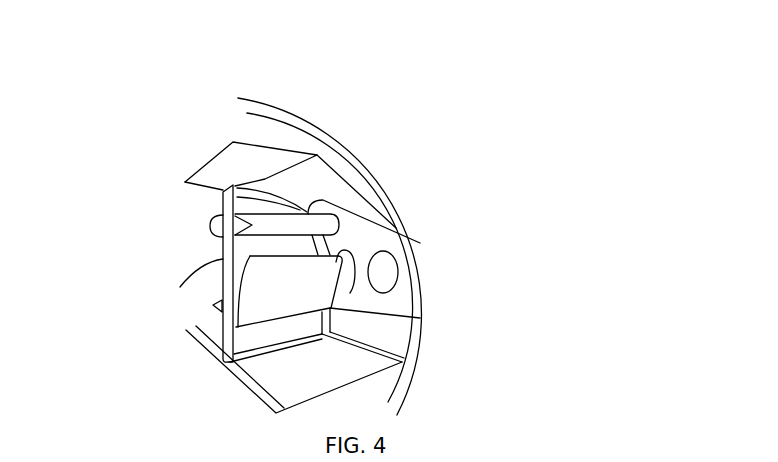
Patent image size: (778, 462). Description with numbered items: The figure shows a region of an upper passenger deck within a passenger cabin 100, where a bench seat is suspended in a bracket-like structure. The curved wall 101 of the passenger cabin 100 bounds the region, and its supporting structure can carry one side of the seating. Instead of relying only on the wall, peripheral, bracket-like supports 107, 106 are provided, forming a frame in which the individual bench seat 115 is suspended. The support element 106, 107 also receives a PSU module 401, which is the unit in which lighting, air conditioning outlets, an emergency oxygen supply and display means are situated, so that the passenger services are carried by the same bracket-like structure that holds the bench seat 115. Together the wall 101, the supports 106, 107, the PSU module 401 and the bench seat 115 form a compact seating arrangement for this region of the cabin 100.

The passenger cabin 100 is at (475, 175).
The wall 101 is at (345, 148).
The PSU module 401 is at (420, 243).
The support element 106 is at (225, 260).
The bracket-like support 107 is at (290, 198).
The bench seat 115 is at (313, 277).